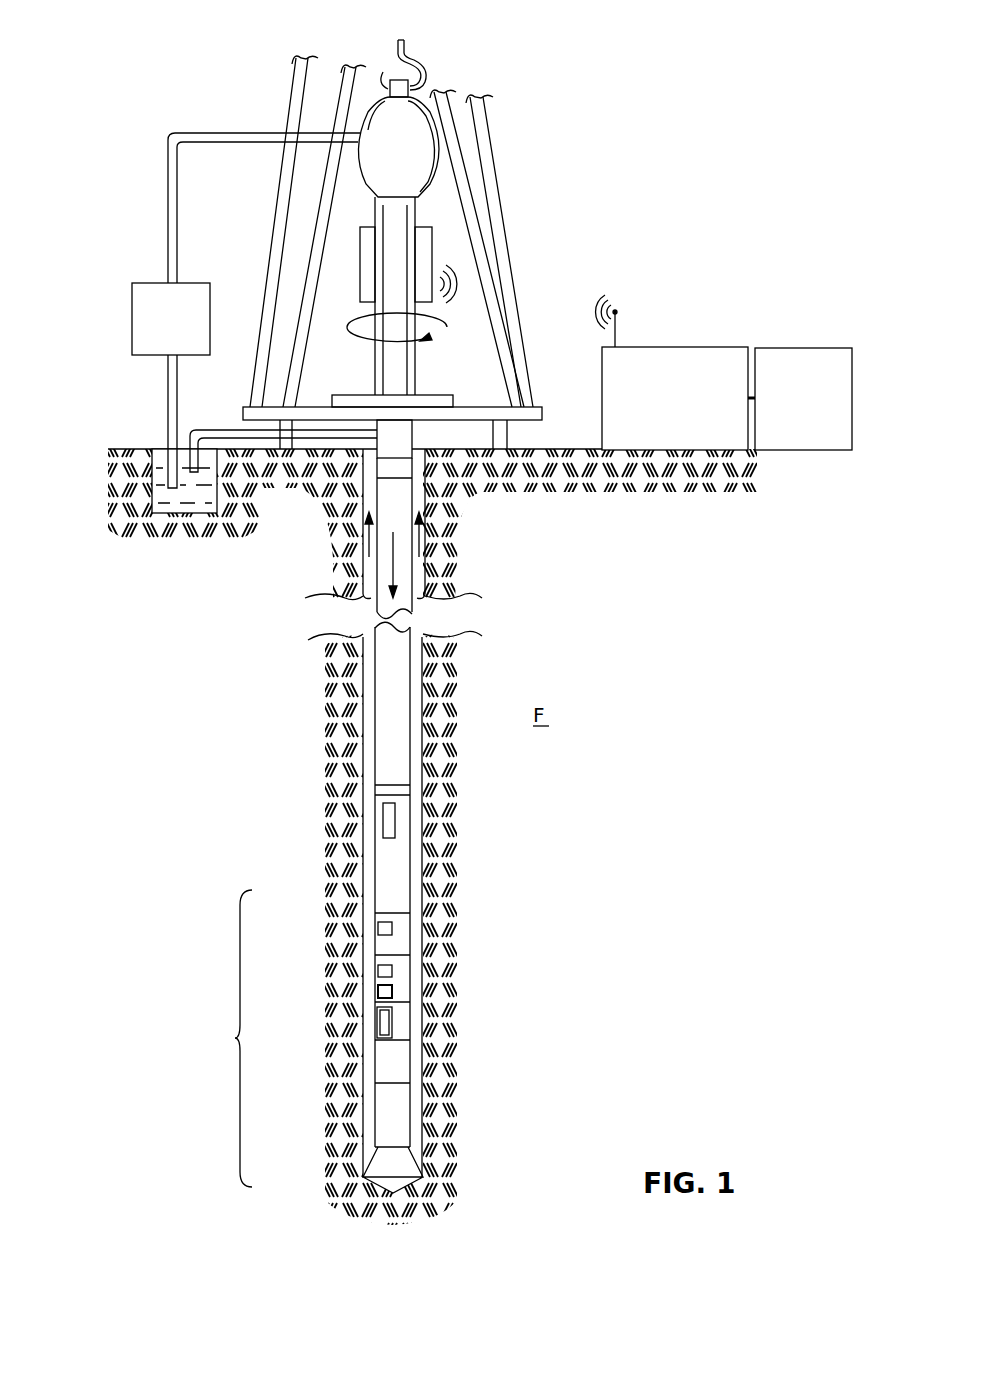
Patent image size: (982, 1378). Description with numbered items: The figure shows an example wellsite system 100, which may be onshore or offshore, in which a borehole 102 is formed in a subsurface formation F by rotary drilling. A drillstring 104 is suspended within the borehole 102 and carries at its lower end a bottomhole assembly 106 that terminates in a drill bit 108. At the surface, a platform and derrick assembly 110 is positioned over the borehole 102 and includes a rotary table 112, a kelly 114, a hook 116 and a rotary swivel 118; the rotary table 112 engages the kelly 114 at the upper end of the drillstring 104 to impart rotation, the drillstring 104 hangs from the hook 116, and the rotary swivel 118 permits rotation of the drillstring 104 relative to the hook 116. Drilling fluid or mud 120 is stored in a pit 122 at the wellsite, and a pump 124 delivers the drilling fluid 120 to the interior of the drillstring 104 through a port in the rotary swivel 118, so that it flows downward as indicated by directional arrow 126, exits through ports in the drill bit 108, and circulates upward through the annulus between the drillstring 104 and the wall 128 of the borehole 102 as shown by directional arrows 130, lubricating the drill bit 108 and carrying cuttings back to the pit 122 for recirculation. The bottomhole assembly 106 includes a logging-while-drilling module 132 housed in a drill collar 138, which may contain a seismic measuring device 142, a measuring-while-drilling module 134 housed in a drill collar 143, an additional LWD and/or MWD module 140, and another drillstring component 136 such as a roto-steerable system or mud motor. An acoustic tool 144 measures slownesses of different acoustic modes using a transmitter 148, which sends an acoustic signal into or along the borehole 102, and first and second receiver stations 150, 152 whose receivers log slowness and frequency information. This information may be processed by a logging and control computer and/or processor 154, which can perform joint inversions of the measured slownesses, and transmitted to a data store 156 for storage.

The wellsite system 100 is at (700, 40).
The platform and derrick assembly 110 is at (515, 124).
The hook 116 is at (396, 44).
The rotary swivel 118 is at (372, 198).
The kelly 114 is at (387, 367).
The rotary table 112 is at (418, 392).
The borehole 102 is at (419, 440).
The drillstring 104 is at (388, 440).
The pump 124 is at (143, 357).
The pit 122 is at (156, 440).
The drilling fluid or mud 120 is at (178, 515).
The directional arrows 130 is at (363, 548).
The directional arrow 126 is at (388, 568).
The logging and control computer and/or processor 154 is at (706, 347).
The data store 156 is at (790, 347).
The wall of the borehole 128 is at (423, 820).
The transmitter 148 is at (387, 817).
The acoustic tool 144 is at (578, 852).
The bottomhole assembly 106 is at (232, 1037).
The first receiver station 150 is at (385, 928).
The second receiver station 152 is at (378, 970).
The seismic measuring device 142 is at (378, 990).
The drill collar 138 is at (397, 960).
The logging-while-drilling (LWD) module 132 is at (397, 987).
The drill collar 143 is at (397, 1013).
The measuring-while-drilling (MWD) module 134 is at (397, 1038).
The additional LWD module and/or MWD module 140 is at (397, 1080).
The drillstring component 136 is at (397, 1125).
The drill bit 108 is at (397, 1168).